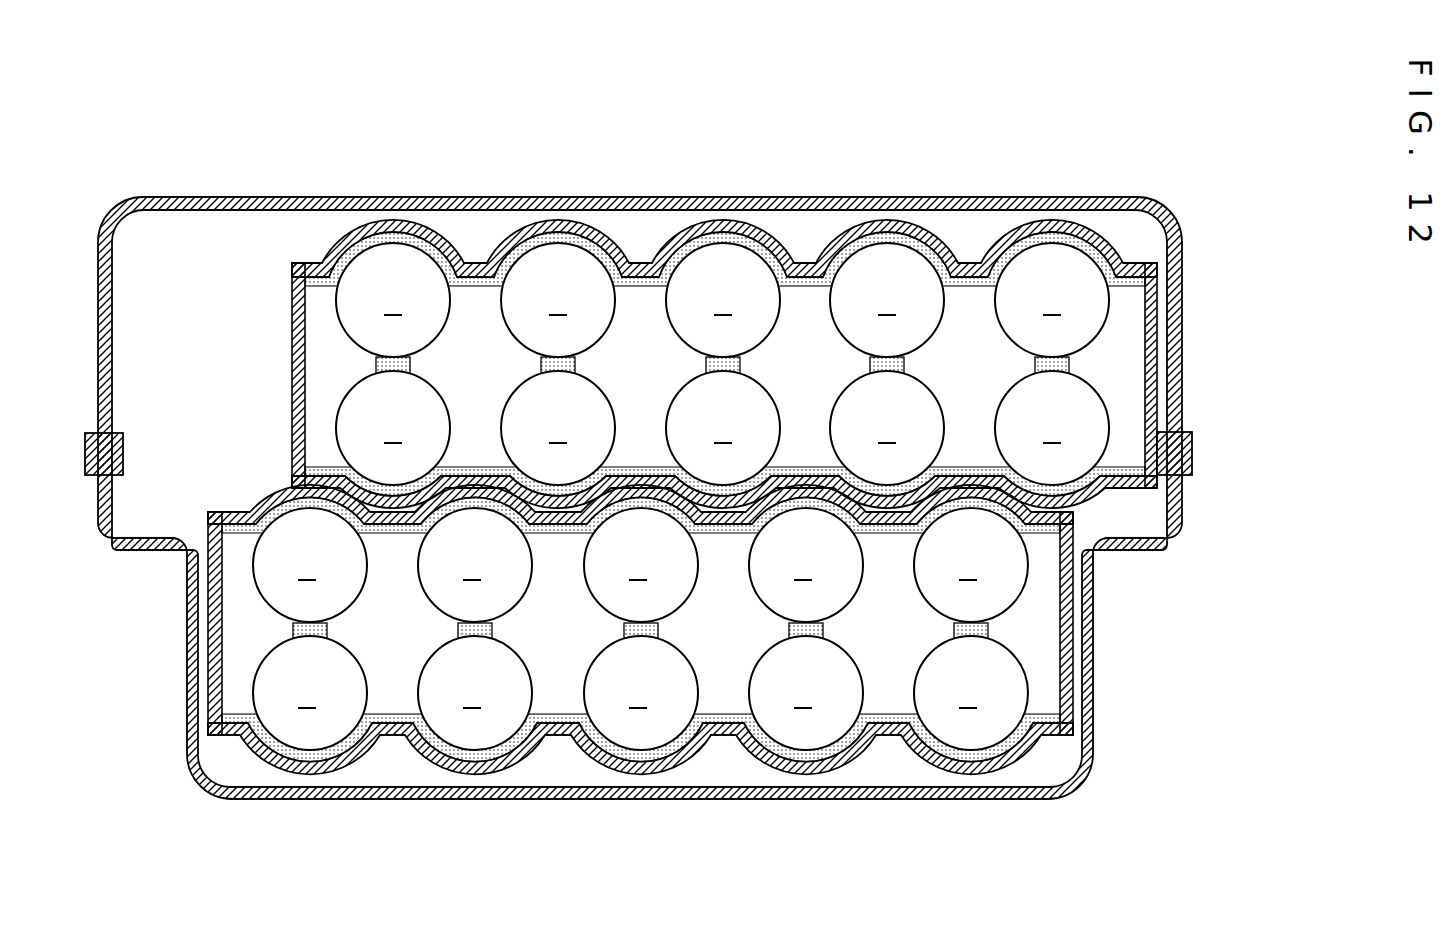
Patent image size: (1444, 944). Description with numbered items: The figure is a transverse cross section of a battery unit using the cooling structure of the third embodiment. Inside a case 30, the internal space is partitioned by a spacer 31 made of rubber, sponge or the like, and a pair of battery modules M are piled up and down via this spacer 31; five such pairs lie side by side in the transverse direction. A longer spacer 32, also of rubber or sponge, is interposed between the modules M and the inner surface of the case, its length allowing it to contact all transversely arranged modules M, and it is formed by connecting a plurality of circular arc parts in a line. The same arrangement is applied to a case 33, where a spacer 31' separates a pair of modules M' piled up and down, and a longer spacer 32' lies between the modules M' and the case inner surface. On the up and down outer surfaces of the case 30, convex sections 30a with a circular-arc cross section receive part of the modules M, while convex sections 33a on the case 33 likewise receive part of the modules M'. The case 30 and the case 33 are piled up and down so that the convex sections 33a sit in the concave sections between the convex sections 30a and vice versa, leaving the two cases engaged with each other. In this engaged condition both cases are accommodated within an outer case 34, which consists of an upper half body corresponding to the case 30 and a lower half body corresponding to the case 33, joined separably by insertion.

The case 30 is at (672, 309).
The convex sections 30a is at (553, 222).
The spacer 31 is at (722, 340).
The spacer 32 is at (724, 395).
The case 33 is at (609, 651).
The convex sections 33a is at (472, 777).
The spacer 31' is at (640, 605).
The spacer 32' is at (640, 603).
The outer case 34 is at (1165, 194).